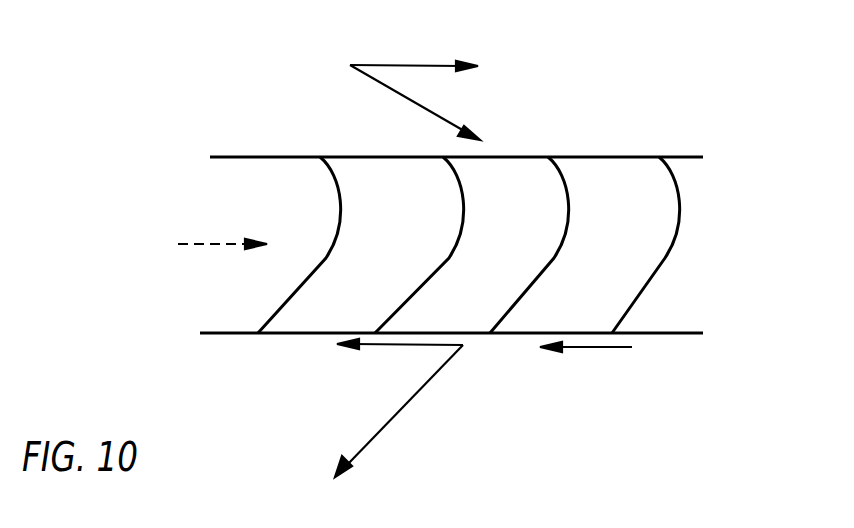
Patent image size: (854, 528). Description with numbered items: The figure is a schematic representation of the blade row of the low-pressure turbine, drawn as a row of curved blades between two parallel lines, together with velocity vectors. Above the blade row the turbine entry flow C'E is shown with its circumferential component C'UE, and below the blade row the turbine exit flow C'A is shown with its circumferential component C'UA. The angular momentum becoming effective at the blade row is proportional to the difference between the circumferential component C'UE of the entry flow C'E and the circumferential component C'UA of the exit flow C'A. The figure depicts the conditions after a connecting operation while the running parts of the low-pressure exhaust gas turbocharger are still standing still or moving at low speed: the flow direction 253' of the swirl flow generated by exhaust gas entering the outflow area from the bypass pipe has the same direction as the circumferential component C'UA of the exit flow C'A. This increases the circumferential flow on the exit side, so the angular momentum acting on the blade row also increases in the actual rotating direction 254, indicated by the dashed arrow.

The actual rotating direction 254 is at (217, 245).
The flow direction of the swirl flow 253' is at (619, 370).
The circumferential component of the turbine entry flow C'UE is at (414, 42).
The turbine entry flow C'E is at (375, 102).
The circumferential component of the turbine exit flow C'UA is at (378, 374).
The turbine exit flow C'A is at (402, 411).